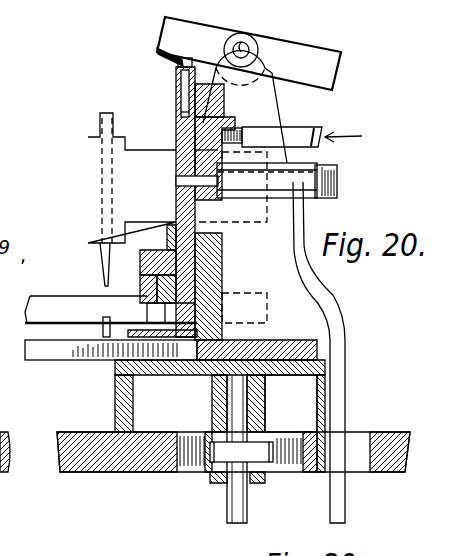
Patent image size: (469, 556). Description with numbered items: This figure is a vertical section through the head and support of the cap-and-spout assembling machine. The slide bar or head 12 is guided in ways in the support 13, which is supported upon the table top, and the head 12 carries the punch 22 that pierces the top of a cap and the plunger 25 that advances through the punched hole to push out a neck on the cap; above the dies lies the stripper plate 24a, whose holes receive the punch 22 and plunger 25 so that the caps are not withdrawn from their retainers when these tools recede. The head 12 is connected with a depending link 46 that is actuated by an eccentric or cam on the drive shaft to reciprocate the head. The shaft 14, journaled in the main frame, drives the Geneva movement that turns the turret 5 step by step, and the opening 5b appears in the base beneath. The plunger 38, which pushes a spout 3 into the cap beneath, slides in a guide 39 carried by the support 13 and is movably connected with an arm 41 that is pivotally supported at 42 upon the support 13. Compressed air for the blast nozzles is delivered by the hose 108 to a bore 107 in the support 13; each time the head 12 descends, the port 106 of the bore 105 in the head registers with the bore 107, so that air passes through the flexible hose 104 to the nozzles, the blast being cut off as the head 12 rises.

The spout 3 is at (101, 327).
The turret 5 is at (50, 354).
The opening in base 5b is at (276, 440).
The slide bar or head 12 is at (176, 158).
The support 13 is at (222, 103).
The shaft 14 is at (230, 505).
The punch 22 is at (31, 314).
The stripper plate 24a is at (188, 328).
The plunger 25 is at (158, 310).
The plunger 38 is at (100, 252).
The guide 39 is at (88, 172).
The arm 41 is at (249, 53).
The pivot 42 is at (246, 52).
The depending link 46 is at (358, 385).
The flexible hose 104 is at (157, 51).
The bore 105 is at (181, 92).
The port 106 is at (236, 118).
The bore 107 is at (224, 165).
The hose 108 is at (324, 133).